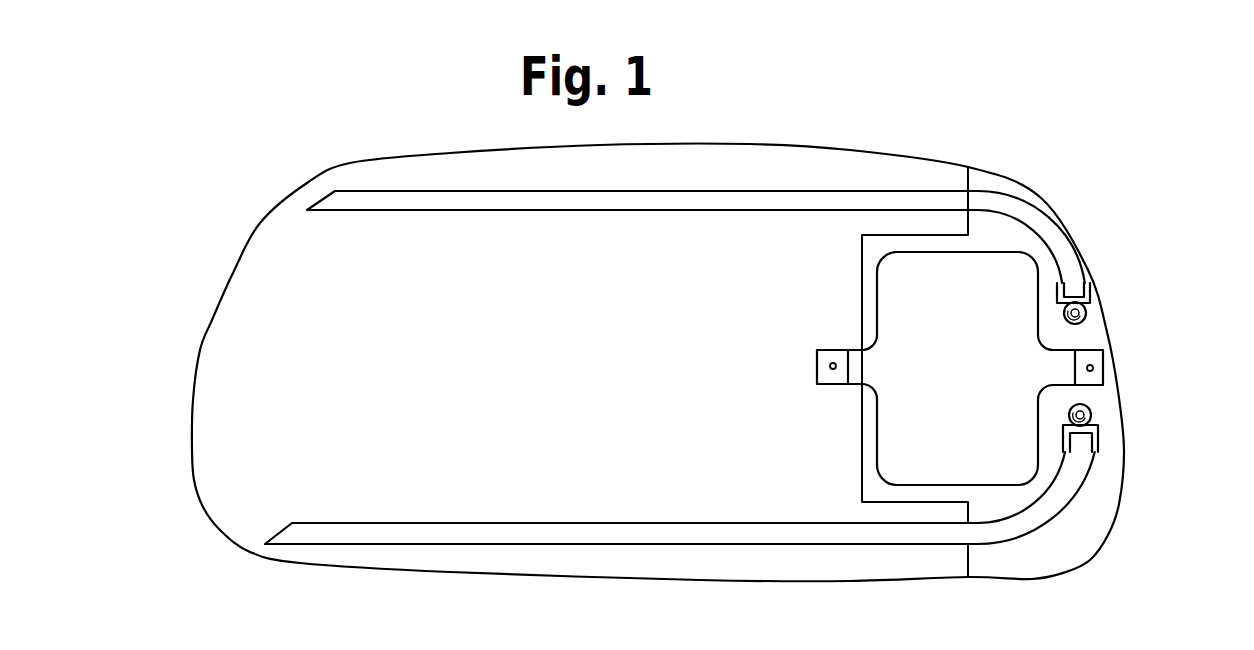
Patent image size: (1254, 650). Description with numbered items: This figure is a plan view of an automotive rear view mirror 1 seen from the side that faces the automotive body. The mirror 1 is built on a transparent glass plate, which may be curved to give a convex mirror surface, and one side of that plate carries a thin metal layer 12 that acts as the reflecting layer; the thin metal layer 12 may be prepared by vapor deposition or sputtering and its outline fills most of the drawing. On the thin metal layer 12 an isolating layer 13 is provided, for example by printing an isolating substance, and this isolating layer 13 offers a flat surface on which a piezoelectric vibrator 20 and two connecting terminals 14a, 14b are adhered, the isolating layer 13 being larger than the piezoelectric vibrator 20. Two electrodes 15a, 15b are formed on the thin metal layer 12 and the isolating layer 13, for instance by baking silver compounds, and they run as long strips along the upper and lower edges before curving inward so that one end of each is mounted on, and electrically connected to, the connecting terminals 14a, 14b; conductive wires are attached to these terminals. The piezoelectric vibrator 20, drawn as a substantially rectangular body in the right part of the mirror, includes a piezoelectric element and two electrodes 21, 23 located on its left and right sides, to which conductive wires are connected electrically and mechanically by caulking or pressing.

The mirror 1 is at (221, 531).
The thin metal layer 12 is at (236, 290).
The isolating layer 13 is at (1063, 548).
The connecting terminal 14a is at (1092, 428).
The connecting terminal 14b is at (1093, 303).
The electrode 15a is at (1057, 518).
The electrode 15b is at (990, 198).
The piezoelectric vibrator 20 is at (1058, 343).
The electrode 21 is at (817, 383).
The electrode 23 is at (1103, 378).